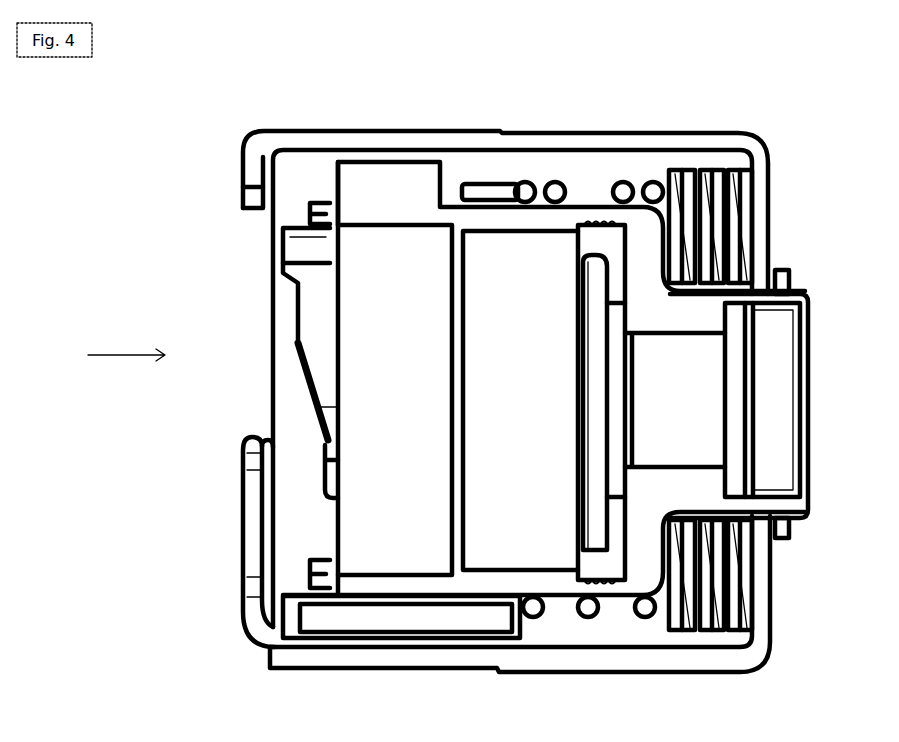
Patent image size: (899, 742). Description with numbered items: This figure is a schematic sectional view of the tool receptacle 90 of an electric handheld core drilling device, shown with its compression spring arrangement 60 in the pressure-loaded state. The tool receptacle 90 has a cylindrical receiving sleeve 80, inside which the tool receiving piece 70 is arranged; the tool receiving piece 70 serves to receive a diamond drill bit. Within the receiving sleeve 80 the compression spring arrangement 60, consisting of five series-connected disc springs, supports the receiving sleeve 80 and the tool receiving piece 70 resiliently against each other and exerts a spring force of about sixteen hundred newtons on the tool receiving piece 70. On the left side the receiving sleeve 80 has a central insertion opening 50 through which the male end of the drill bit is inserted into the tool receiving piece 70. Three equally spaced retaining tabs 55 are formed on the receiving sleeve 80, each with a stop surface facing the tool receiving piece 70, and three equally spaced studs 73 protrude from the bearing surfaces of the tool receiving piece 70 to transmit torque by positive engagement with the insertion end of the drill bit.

The tool receptacle 90 is at (238, 95).
The tool receiving piece 70 is at (402, 172).
The compression spring arrangement 60 is at (708, 180).
The stud 73 is at (288, 220).
The insertion opening 50 is at (126, 368).
The retaining tab 55 is at (252, 492).
The receiving sleeve 80 is at (390, 658).